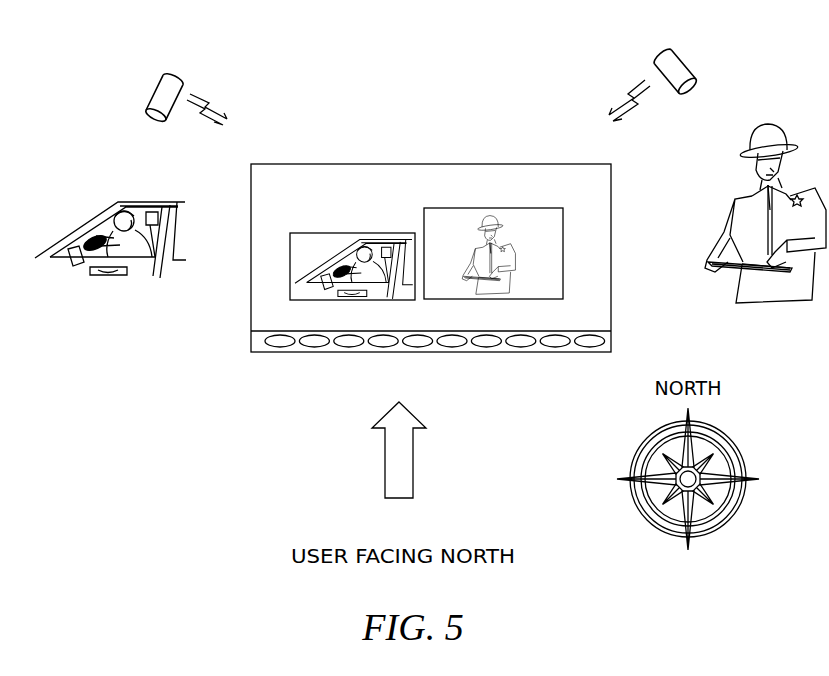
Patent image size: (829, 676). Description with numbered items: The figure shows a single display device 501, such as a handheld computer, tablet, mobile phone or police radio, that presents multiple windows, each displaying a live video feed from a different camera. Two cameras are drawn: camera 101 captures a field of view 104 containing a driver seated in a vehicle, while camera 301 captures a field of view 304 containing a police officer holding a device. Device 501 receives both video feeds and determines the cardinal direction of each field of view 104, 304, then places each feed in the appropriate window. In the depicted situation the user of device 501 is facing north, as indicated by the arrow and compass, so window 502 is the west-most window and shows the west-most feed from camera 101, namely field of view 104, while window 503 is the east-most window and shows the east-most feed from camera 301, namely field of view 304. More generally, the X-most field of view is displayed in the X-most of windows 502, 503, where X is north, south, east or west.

The camera 101 is at (180, 70).
The field of view 104 is at (176, 204).
The camera 301 is at (684, 58).
The field of view 304 is at (748, 190).
The device 501 is at (428, 164).
The window 502 is at (352, 233).
The window 503 is at (490, 208).